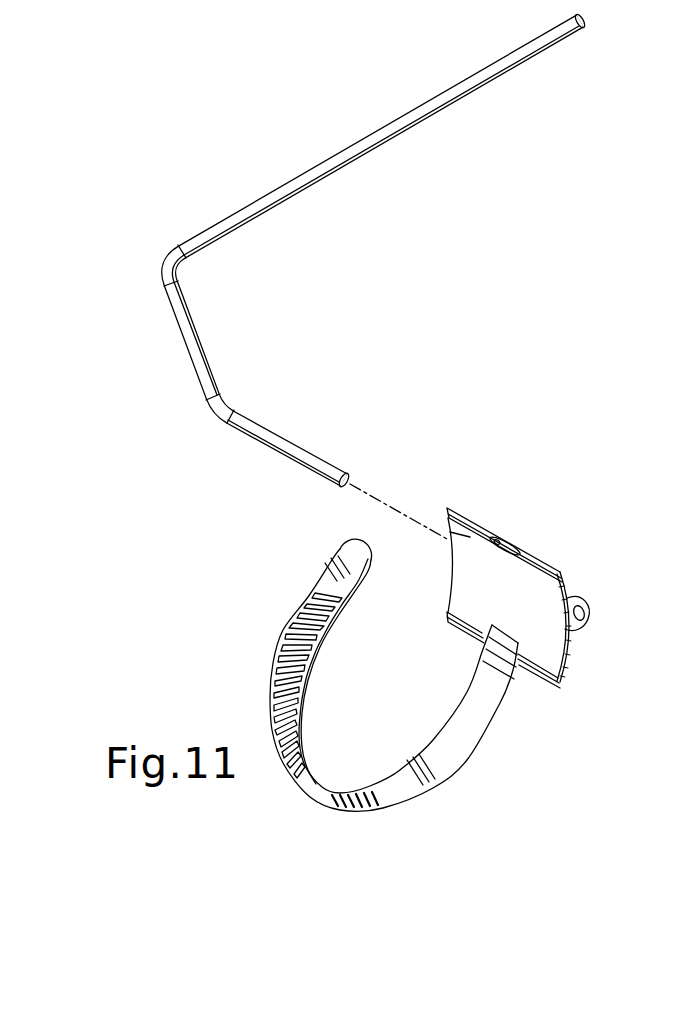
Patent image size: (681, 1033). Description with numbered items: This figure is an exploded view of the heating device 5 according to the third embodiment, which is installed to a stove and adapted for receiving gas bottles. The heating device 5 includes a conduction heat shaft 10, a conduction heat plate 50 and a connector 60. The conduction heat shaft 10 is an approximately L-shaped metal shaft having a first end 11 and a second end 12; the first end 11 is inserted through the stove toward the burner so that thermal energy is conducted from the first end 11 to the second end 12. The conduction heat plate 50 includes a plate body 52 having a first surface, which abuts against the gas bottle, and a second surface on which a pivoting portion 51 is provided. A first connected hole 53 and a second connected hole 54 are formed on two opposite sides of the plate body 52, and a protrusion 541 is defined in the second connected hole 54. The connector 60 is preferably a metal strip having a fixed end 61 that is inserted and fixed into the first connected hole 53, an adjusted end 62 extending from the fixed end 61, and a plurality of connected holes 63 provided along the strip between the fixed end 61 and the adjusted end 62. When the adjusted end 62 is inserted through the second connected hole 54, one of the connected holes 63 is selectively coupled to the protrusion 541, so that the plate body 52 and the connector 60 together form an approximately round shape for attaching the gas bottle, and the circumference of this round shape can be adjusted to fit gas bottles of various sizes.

The conduction heat shaft 10 is at (326, 276).
The first end 11 is at (483, 78).
The second end 12 is at (275, 445).
The heating device 5 is at (357, 675).
The connector 60 is at (470, 727).
The fixed end 61 is at (487, 662).
The adjusted end 62 is at (348, 560).
The connected holes 63 is at (318, 598).
The conduction heat plate 50 is at (554, 615).
The pivoting portion 51 is at (598, 614).
The plate body 52 is at (557, 647).
The first connected hole 53 is at (518, 667).
The second connected hole 54 is at (497, 535).
The protrusion 541 is at (510, 547).